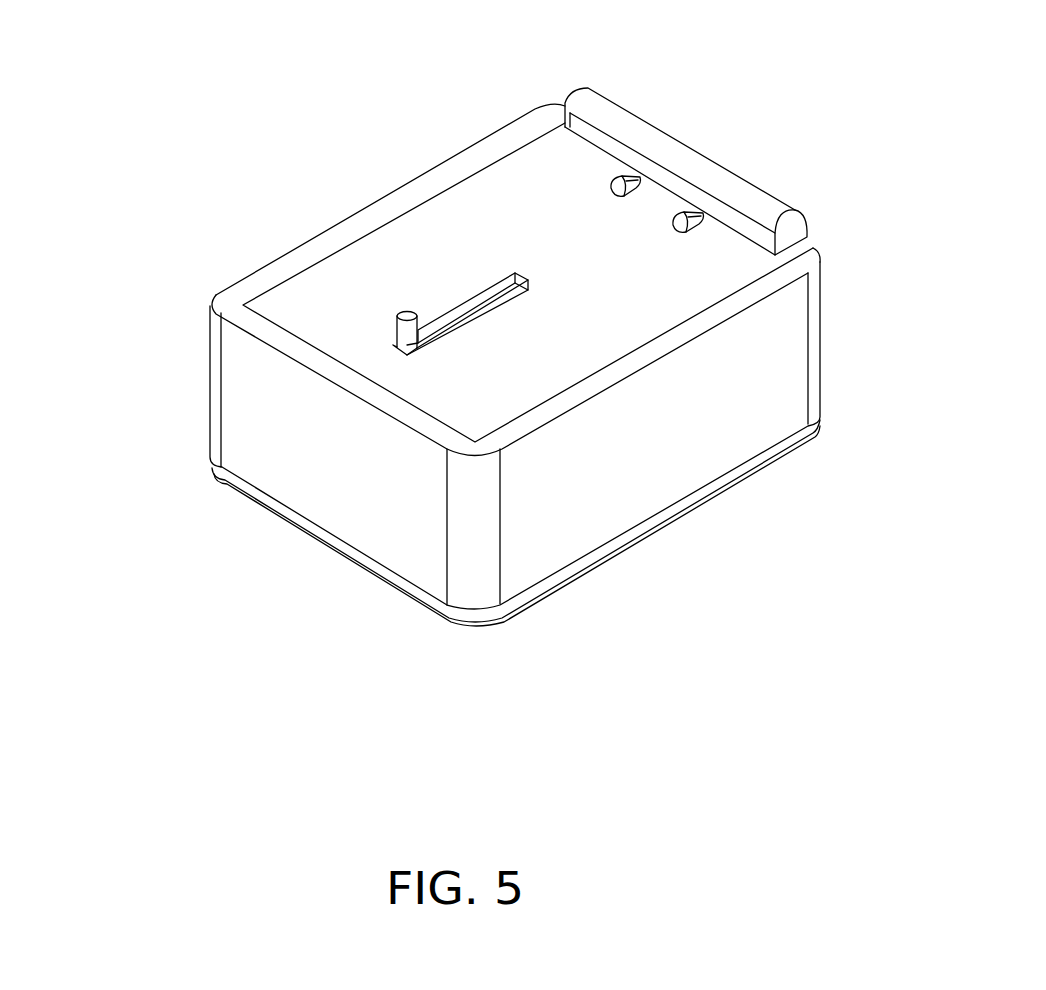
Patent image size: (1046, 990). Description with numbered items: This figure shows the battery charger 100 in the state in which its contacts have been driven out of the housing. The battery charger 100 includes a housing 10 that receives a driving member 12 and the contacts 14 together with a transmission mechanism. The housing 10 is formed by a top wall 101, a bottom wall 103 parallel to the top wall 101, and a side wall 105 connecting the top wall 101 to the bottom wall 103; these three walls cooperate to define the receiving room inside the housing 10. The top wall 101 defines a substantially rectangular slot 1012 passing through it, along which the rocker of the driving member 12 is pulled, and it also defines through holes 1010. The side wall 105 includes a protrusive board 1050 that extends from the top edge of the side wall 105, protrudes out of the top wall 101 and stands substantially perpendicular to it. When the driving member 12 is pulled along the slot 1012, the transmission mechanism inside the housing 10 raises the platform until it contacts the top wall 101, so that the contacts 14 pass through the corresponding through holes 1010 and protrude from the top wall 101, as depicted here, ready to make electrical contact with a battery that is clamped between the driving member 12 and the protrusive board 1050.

The battery charger 100 is at (368, 87).
The housing 10 is at (112, 262).
The top wall 101 is at (280, 307).
The side wall 105 is at (238, 388).
The bottom wall 103 is at (222, 494).
The driving member 12 is at (402, 312).
The slot 1012 is at (489, 282).
The protrusive board 1050 is at (612, 115).
The contacts 14 is at (630, 173).
The through holes 1010 is at (640, 193).